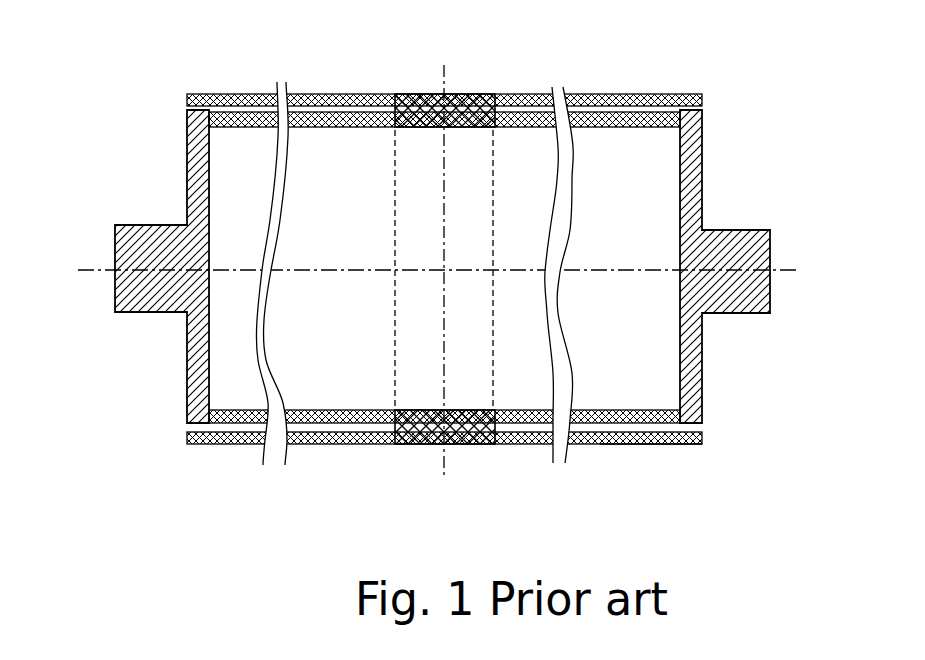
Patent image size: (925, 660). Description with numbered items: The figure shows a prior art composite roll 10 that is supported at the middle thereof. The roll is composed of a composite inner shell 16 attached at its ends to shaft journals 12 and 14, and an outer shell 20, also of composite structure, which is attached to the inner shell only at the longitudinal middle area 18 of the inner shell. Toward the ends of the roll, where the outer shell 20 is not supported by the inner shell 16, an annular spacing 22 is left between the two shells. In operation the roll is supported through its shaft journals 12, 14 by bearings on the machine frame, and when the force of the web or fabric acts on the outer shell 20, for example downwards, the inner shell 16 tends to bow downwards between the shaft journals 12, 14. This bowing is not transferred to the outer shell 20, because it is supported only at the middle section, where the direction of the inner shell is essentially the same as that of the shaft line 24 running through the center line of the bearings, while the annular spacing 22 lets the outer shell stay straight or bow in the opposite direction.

The composite roll 10 is at (509, 89).
The shaft journal 12 is at (136, 248).
The shaft journal 14 is at (727, 247).
The composite inner shell 16 is at (263, 444).
The longitudinal middle area 18 is at (433, 398).
The outer shell 20 is at (603, 448).
The annular spacing 22 is at (648, 448).
The shaft line 24 is at (757, 286).